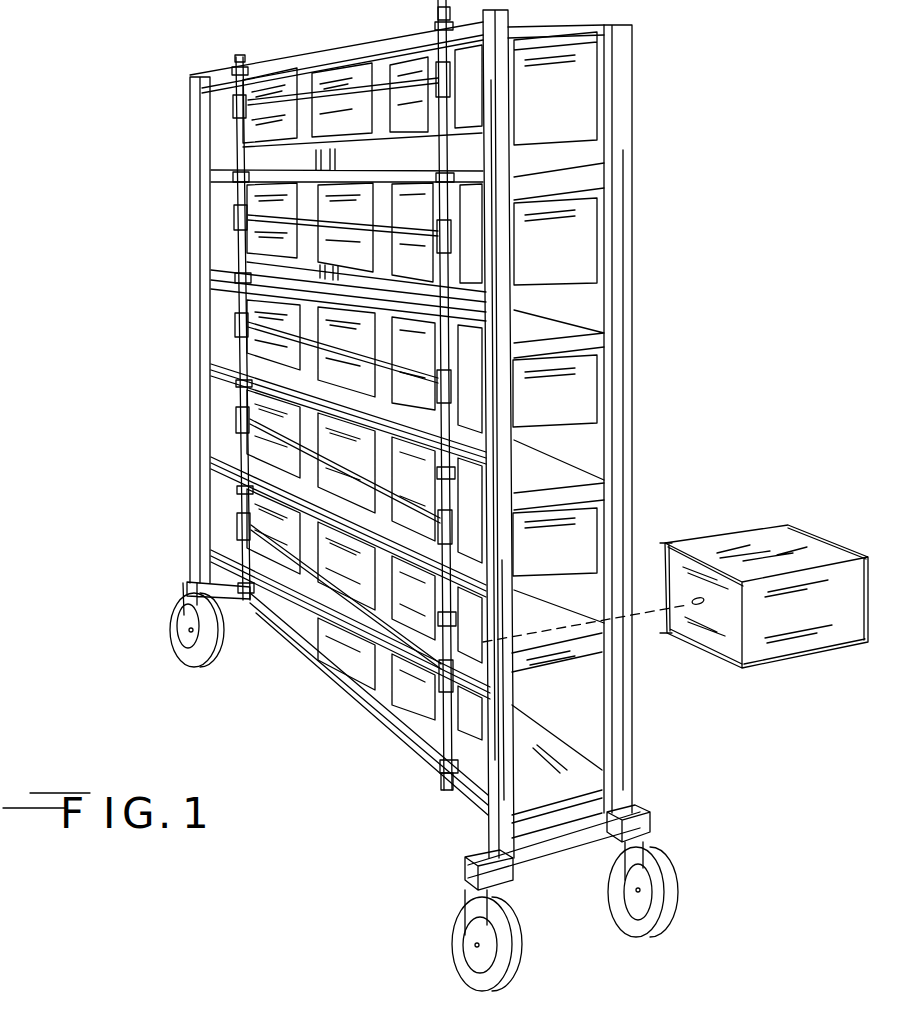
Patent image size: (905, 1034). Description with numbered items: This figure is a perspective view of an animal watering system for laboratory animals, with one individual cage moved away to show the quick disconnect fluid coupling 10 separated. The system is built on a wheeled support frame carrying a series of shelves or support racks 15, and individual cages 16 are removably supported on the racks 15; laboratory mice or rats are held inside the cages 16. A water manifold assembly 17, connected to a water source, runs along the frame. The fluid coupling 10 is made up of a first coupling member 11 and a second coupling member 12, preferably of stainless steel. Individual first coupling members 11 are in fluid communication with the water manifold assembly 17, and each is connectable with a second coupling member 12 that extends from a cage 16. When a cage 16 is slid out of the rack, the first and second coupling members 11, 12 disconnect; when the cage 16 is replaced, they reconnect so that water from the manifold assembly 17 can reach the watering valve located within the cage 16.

The quick disconnect fluid coupling 10 is at (345, 350).
The first coupling member 11 is at (350, 470).
The second coupling member 12 is at (699, 606).
The support rack 15 is at (582, 173).
The cage 16 is at (285, 196).
The water manifold assembly 17 is at (240, 132).